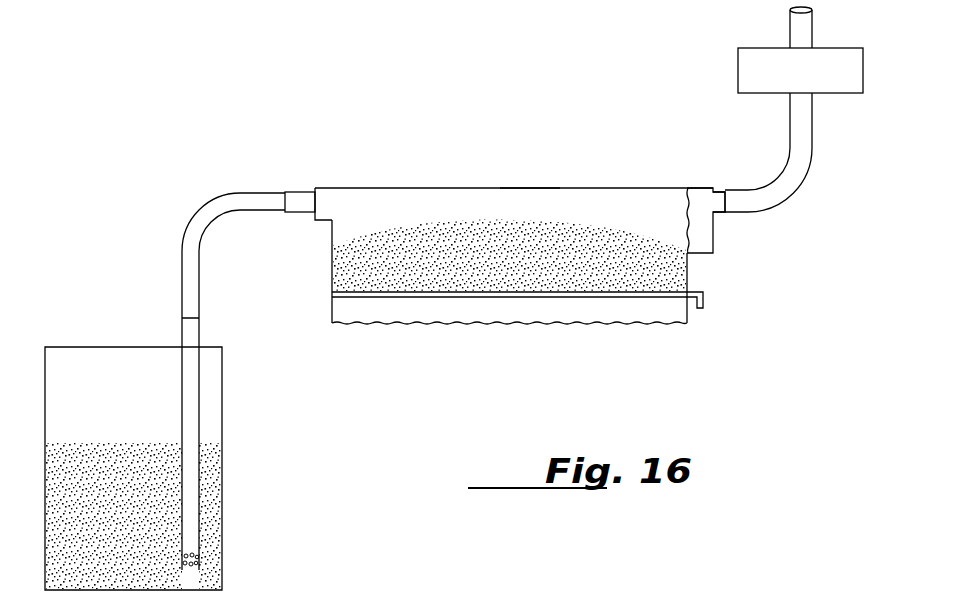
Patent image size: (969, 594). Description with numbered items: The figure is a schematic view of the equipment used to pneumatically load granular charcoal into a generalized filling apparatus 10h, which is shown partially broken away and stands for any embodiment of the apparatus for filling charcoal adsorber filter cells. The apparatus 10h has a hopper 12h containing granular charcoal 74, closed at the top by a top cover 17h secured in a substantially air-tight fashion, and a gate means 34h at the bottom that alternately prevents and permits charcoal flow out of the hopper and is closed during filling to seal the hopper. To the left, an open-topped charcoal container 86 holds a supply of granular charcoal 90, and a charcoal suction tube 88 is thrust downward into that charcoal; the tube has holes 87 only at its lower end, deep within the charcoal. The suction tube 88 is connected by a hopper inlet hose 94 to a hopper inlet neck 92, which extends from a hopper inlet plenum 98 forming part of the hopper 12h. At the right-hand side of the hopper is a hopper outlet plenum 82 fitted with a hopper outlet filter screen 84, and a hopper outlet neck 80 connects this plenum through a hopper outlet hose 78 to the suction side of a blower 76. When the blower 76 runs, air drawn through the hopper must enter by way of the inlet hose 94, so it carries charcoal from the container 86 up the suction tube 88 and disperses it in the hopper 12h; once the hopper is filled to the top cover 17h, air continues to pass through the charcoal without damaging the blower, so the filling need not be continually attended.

The apparatus for filling charcoal adsorber filter cells 10h is at (452, 190).
The hopper 12h is at (413, 197).
The top cover 17h is at (523, 188).
The granular charcoal 74 is at (375, 267).
The gate means 34h is at (710, 294).
The hopper outlet filter screen 84 is at (685, 212).
The hopper outlet plenum 82 is at (702, 202).
The hopper outlet neck 80 is at (722, 207).
The hopper outlet hose 78 is at (802, 152).
The blower 76 is at (752, 67).
The hopper inlet hose 94 is at (238, 207).
The hopper inlet neck 92 is at (300, 202).
The hopper inlet plenum 98 is at (322, 205).
The charcoal container 86 is at (223, 397).
The granular charcoal supply 90 is at (77, 524).
The charcoal suction tube 88 is at (187, 493).
The holes 87 is at (187, 552).